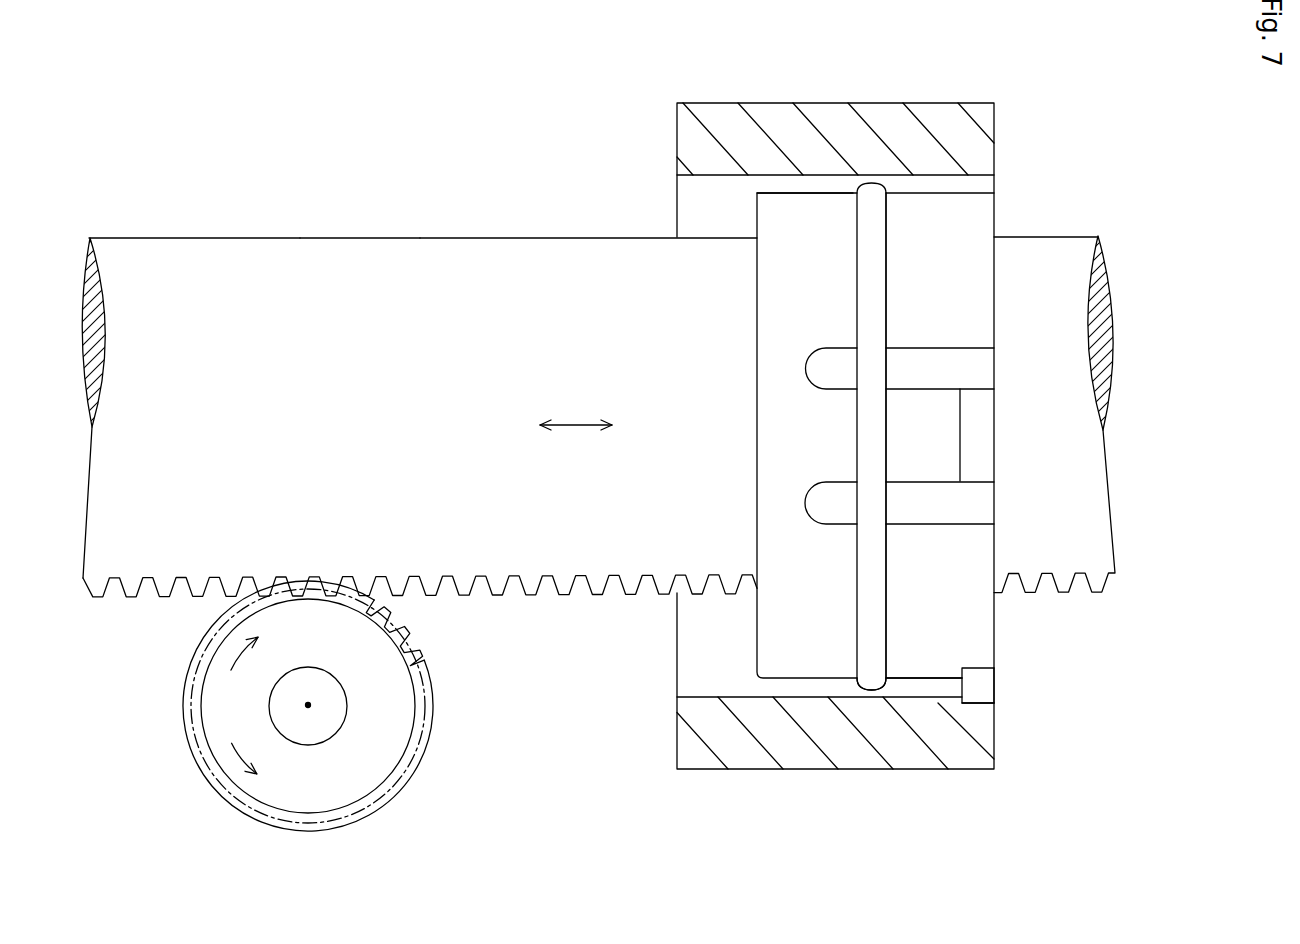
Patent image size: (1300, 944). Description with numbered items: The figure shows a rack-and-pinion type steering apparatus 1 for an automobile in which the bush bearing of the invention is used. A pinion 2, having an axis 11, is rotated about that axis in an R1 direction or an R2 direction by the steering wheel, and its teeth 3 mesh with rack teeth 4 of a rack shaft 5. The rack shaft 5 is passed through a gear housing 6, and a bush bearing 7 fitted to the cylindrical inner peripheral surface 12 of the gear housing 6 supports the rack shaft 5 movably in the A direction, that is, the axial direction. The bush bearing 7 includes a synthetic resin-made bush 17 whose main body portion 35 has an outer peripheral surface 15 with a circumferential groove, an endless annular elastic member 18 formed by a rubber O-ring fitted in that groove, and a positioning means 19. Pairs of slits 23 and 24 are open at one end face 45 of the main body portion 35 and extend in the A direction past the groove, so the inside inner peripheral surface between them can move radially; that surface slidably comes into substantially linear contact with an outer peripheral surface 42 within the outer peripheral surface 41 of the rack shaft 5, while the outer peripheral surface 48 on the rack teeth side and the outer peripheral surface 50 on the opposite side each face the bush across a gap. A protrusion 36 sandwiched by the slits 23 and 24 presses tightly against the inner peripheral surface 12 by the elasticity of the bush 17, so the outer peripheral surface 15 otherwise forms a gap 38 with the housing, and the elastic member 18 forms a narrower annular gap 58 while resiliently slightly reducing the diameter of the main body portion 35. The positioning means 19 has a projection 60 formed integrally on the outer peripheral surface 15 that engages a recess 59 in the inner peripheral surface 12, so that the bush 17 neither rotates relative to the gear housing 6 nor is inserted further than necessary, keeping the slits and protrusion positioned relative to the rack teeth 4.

The rack-and-pinion type steering apparatus 1 is at (601, 178).
The pinion 2 is at (281, 798).
The teeth of the pinion 3 is at (428, 722).
The rack teeth 4 is at (532, 583).
The rack shaft 5 is at (233, 267).
The gear housing 6 is at (757, 758).
The bush bearing 7 is at (998, 641).
The axis 11 is at (308, 705).
The inner peripheral surface 12 is at (719, 188).
The outer peripheral surface 15 is at (823, 678).
The bush 17 is at (755, 647).
The endless annular elastic member 18 is at (870, 202).
The positioning means 19 is at (1004, 692).
The slit 23 is at (975, 362).
The slit 24 is at (975, 503).
The main body portion 35 is at (950, 207).
The protrusion 36 is at (977, 412).
The gap 38 is at (820, 187).
The outer peripheral surface of the rack shaft 41 is at (352, 297).
The outer peripheral surface 42 is at (1012, 432).
The one end face 45 is at (993, 253).
The outer peripheral surface on the rack teeth side 48 is at (145, 538).
The outer peripheral surface on the opposite side to the rack teeth side 50 is at (473, 253).
The annular gap 58 is at (877, 690).
The recess 59 is at (970, 703).
The projection 60 is at (980, 688).
The A direction A is at (577, 423).
The R1 direction R1 is at (236, 655).
The R2 direction R2 is at (240, 762).